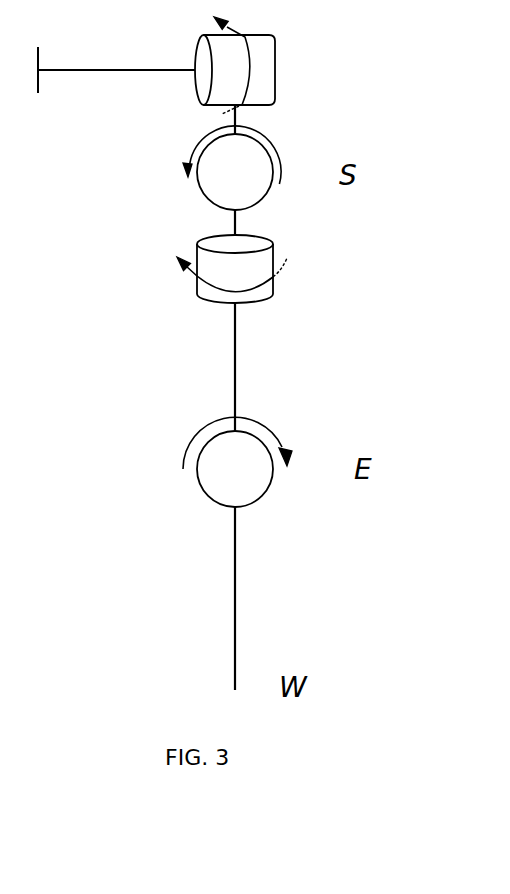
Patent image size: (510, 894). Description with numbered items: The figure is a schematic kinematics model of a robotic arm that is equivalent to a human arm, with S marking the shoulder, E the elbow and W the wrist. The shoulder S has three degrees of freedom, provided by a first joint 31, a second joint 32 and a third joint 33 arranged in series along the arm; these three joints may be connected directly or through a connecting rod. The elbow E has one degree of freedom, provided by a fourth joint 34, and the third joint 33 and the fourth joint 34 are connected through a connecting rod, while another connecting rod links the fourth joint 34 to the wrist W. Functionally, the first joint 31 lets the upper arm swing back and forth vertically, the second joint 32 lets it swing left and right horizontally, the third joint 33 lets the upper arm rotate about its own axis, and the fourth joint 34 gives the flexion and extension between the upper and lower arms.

The first joint 31 is at (275, 68).
The second joint 32 is at (279, 184).
The third joint 33 is at (277, 257).
The fourth joint 34 is at (273, 479).